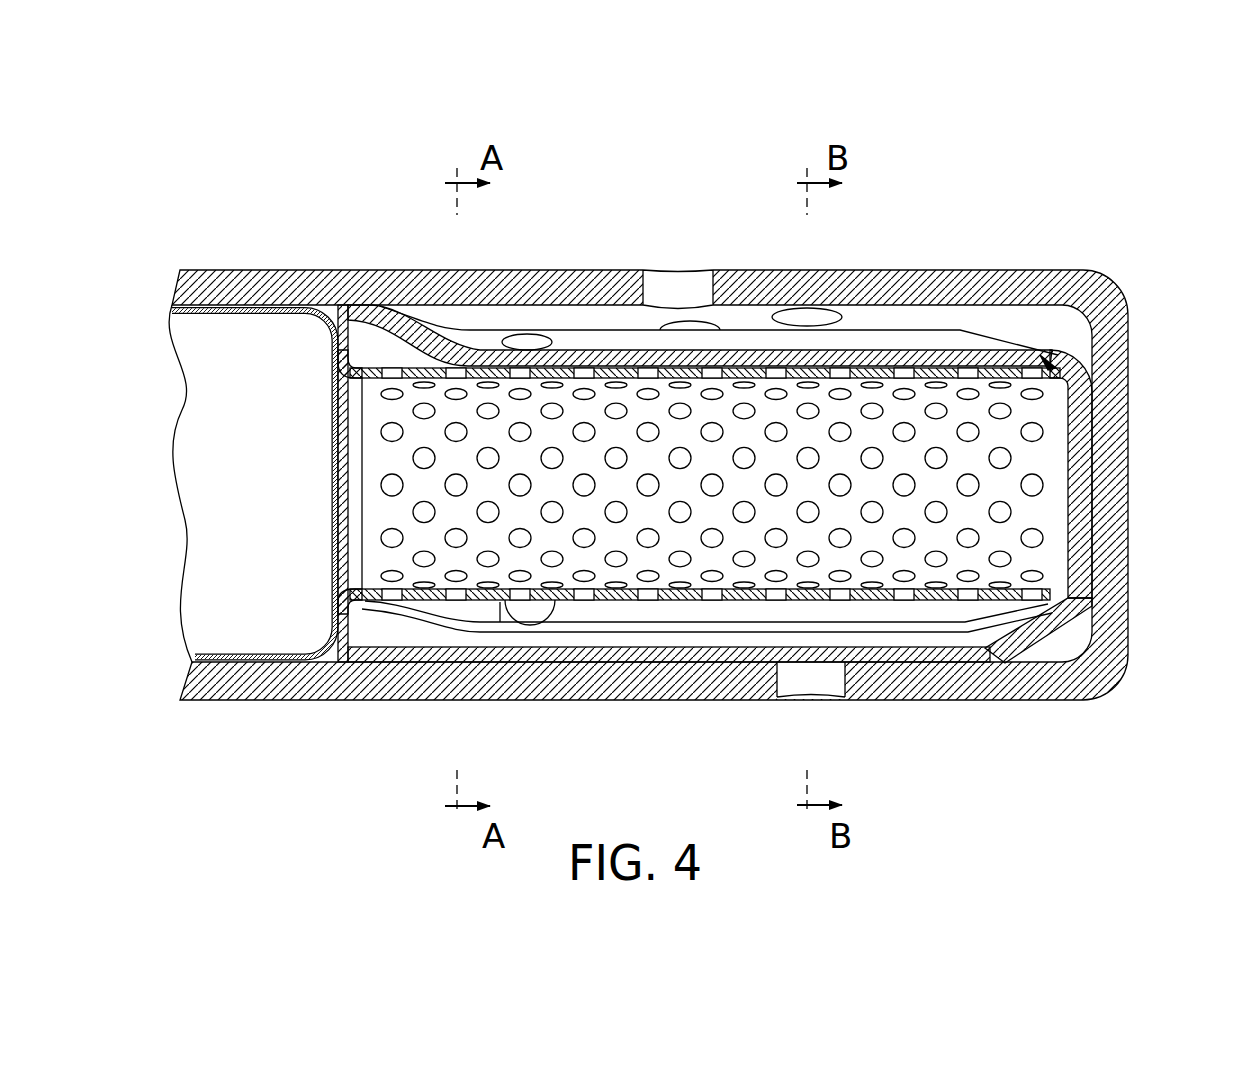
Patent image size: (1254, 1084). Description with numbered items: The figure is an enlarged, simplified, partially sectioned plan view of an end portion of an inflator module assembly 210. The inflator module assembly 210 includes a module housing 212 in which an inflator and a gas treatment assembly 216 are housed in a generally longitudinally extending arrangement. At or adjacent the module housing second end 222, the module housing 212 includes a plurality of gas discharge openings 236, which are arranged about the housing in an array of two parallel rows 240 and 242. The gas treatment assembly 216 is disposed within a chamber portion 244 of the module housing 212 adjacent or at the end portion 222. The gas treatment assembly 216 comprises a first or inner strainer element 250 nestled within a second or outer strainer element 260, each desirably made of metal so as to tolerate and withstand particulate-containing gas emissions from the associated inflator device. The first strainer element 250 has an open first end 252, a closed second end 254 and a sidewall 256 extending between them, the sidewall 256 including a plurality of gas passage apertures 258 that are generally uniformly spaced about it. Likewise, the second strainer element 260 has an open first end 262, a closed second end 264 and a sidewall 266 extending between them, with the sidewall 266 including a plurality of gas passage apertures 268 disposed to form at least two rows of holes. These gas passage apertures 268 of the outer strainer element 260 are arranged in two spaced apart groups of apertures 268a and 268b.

The inflator module assembly 210 is at (689, 468).
The module housing 212 is at (648, 480).
The gas treatment assembly 216 is at (1055, 368).
The module housing second end 222 is at (1024, 714).
The gas discharge openings 236 is at (834, 702).
The row of gas discharge openings 240 is at (680, 262).
The row of gas discharge openings 242 is at (861, 260).
The chamber portion 244 is at (1044, 648).
The first strainer element 250 is at (346, 607).
The open first end 252 is at (314, 415).
The closed second end 254 is at (1097, 500).
The sidewall 256 is at (558, 602).
The gas passage apertures 258 is at (487, 563).
The second strainer element 260 is at (395, 636).
The open first end 262 is at (361, 305).
The closed second end 264 is at (1090, 406).
The sidewall 266 is at (703, 281).
The gas passage apertures 268 is at (713, 690).
The group of apertures 268a is at (527, 344).
The group of apertures 268b is at (1008, 636).